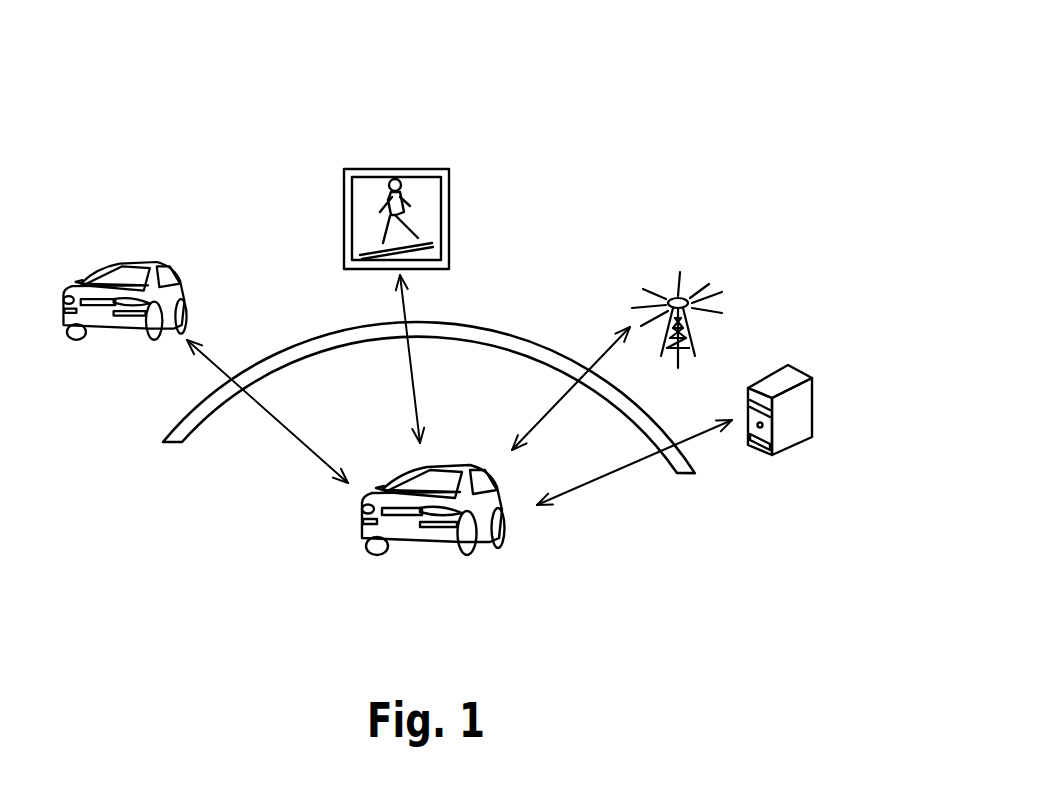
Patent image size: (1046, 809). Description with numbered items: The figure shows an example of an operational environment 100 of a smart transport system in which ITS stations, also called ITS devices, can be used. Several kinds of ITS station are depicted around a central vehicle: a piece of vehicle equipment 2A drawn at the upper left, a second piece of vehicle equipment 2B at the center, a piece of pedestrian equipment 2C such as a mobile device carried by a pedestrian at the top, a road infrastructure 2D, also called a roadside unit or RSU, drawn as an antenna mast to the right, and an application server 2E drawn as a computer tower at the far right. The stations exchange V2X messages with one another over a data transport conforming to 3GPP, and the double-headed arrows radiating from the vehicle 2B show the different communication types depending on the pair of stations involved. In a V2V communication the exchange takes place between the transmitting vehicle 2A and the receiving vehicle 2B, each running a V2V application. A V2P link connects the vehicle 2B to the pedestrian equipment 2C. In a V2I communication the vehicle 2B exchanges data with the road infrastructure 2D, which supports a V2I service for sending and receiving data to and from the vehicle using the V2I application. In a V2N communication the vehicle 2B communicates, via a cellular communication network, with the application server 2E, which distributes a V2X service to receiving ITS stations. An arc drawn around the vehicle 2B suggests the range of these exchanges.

The operational environment 100 is at (473, 52).
The vehicle equipment 2A is at (124, 268).
The vehicle equipment 2B is at (433, 545).
The pedestrian equipment 2C is at (397, 182).
The road infrastructure 2D is at (677, 283).
The application server 2E is at (844, 389).
The V2V communication V2V is at (267, 411).
The V2P communication V2P is at (437, 359).
The V2I communication V2I is at (571, 388).
The V2N communication V2N is at (634, 469).